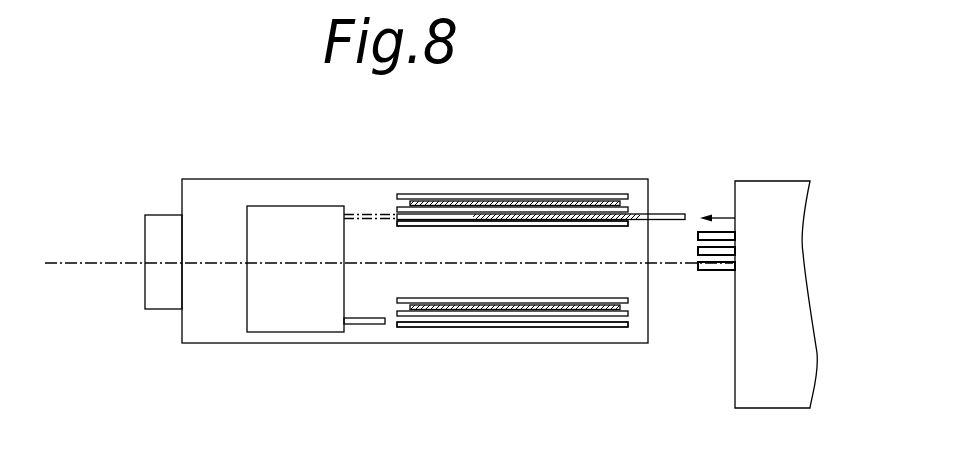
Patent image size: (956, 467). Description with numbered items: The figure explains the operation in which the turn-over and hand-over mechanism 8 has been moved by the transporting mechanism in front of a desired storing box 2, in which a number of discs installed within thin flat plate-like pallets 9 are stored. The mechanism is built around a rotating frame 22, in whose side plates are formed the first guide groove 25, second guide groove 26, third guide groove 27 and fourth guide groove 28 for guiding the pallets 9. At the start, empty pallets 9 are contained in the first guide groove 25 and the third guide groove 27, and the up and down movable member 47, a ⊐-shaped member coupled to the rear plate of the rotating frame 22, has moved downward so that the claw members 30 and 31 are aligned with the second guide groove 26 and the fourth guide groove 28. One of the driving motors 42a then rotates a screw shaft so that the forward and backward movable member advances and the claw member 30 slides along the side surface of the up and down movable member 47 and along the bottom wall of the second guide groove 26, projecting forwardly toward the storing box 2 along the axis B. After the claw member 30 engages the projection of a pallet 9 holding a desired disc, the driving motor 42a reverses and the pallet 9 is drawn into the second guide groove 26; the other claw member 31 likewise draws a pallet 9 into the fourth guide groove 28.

The storing box 2 is at (768, 200).
The turn-over and hand-over mechanism 8 is at (300, 177).
The pallet 9 is at (514, 194).
The rotating frame 22 is at (215, 178).
The first guide groove 25 is at (627, 203).
The second guide groove 26 is at (632, 225).
The third guide groove 27 is at (623, 306).
The fourth guide groove 28 is at (628, 322).
The claw member 30 is at (454, 210).
The claw member 31 is at (362, 325).
The driving motor 42a is at (158, 227).
The up and down movable member 47 is at (297, 320).
The optical axis B is at (375, 253).